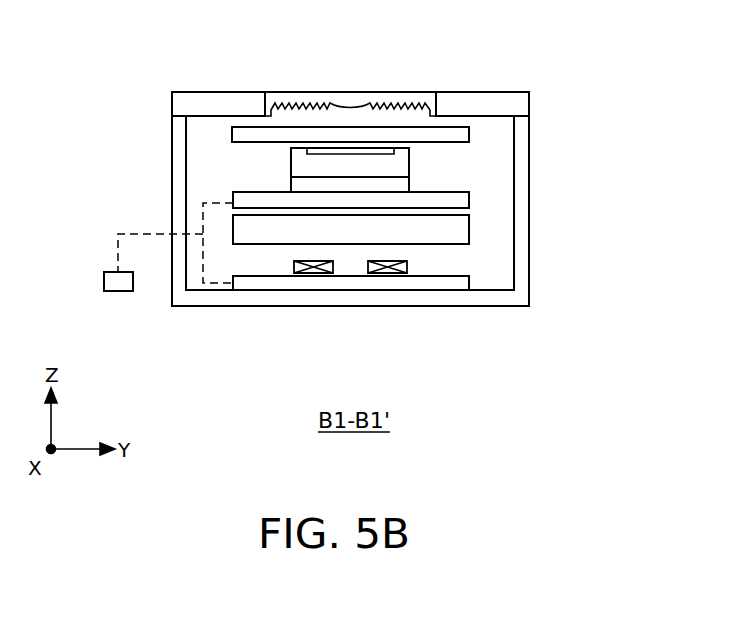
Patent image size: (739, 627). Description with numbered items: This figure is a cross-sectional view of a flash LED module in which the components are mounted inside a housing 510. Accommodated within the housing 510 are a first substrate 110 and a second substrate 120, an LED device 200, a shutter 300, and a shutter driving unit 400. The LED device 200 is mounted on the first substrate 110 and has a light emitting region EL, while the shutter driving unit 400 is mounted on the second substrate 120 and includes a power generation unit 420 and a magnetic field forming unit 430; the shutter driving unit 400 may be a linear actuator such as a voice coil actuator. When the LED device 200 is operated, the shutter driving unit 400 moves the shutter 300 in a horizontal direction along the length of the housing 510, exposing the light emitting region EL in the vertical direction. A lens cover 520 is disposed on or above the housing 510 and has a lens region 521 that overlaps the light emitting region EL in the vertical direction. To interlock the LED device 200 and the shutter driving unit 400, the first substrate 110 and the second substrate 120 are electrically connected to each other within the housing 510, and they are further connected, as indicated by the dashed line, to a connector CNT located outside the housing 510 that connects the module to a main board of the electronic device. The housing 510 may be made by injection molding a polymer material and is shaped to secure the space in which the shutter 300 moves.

The housing 510 is at (522, 156).
The lens cover 520 is at (492, 105).
The lens region 521 is at (361, 108).
The shutter 300 is at (244, 132).
The LED device 200 is at (283, 170).
The light emitting region EL is at (321, 150).
The first substrate 110 is at (243, 197).
The shutter driving unit 400 is at (445, 247).
The power generation unit 420 is at (447, 232).
The magnetic field forming unit 430 is at (407, 268).
The second substrate 120 is at (345, 283).
The connector CNT is at (120, 284).